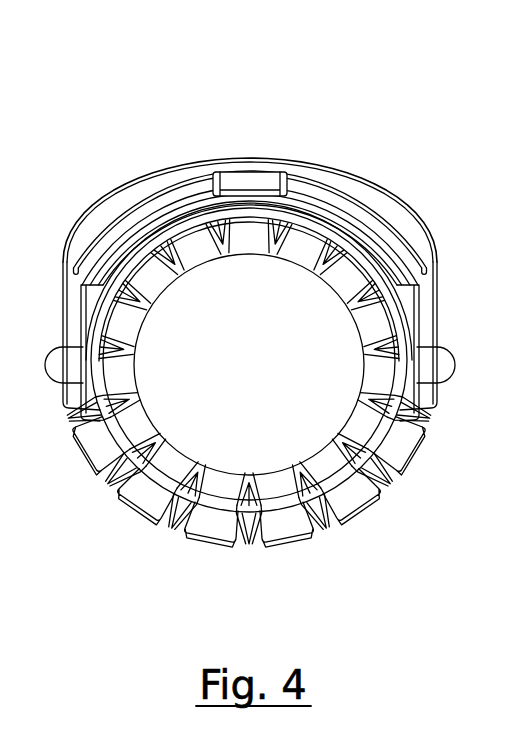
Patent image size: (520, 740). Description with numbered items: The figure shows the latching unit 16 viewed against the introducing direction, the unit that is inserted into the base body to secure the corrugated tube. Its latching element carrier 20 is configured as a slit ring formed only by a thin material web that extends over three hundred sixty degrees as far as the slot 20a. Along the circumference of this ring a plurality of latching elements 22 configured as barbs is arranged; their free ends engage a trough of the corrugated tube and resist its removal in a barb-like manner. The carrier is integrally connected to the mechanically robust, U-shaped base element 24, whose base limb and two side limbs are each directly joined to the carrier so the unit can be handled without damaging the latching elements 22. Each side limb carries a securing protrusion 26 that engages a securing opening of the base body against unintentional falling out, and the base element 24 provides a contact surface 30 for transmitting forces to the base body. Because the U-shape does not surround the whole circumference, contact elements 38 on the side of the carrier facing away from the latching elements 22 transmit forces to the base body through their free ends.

The latching unit 16 is at (136, 111).
The latching element carrier 20 is at (48, 515).
The slot 20a is at (248, 522).
The latching elements 22 is at (344, 284).
The base element 24 is at (306, 172).
The securing protrusion 26 is at (446, 372).
The contact surface 30 is at (140, 195).
The contact elements 38 is at (148, 497).